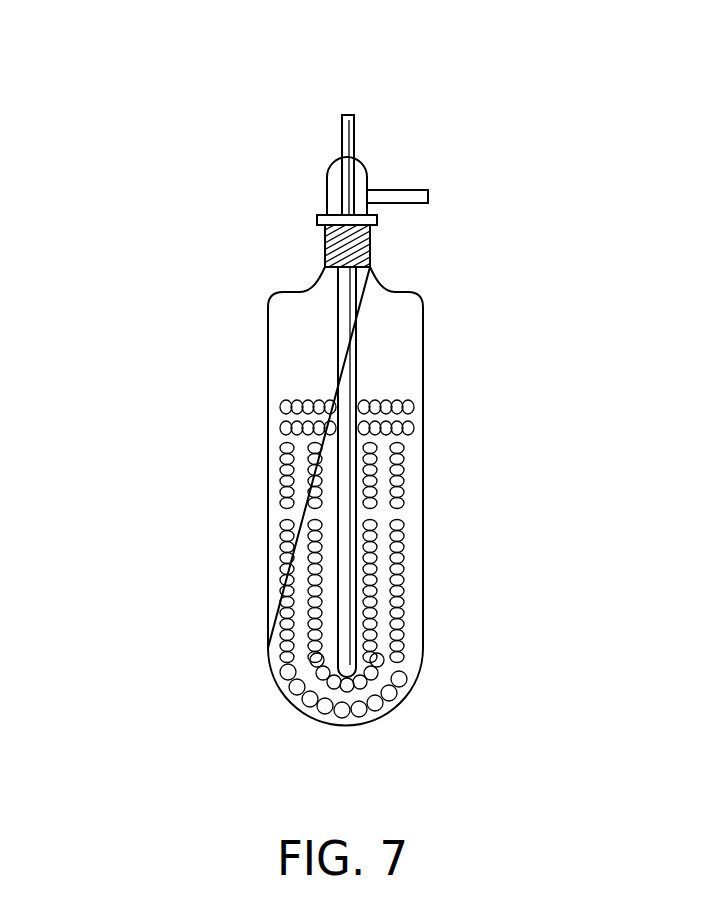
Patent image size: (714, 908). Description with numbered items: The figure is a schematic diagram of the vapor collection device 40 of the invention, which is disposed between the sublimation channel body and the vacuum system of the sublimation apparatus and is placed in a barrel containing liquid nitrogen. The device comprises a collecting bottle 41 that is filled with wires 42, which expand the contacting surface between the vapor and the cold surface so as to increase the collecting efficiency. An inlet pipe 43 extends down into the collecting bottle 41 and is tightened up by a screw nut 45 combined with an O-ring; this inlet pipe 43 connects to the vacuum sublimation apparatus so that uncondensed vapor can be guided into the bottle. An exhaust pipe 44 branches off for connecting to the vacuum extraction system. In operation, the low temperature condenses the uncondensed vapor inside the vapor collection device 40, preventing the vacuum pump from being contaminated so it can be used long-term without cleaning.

The vapor collection device 40 is at (178, 437).
The collecting bottle 41 is at (423, 385).
The wires 42 is at (377, 600).
The inlet pipe 43 is at (350, 113).
The exhaust pipe 44 is at (402, 197).
The screw nut 45 is at (327, 245).